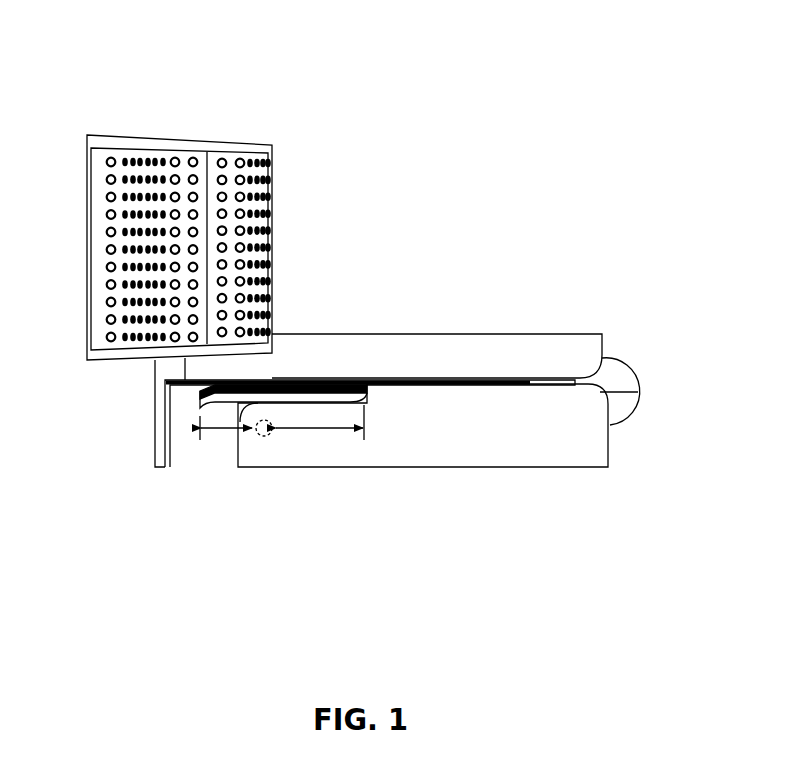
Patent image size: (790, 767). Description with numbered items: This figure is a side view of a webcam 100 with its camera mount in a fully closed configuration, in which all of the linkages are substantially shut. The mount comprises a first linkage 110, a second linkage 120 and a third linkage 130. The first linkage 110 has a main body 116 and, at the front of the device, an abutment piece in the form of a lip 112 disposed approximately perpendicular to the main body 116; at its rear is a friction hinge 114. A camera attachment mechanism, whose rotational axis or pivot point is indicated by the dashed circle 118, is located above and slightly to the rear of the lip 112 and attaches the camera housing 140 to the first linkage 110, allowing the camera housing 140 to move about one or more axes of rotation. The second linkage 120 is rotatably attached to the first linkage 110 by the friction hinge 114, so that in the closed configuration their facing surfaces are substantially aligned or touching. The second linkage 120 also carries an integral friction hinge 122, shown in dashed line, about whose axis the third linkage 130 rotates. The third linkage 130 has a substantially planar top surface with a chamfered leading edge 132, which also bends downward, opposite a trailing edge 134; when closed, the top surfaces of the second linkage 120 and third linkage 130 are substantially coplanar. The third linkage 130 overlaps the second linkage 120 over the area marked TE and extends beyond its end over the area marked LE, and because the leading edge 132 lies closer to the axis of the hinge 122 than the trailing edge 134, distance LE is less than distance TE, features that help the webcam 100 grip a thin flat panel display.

The webcam 100 is at (356, 648).
The first linkage 110 is at (410, 333).
The lip 112 is at (153, 458).
The friction hinge 114 is at (614, 381).
The main body 116 is at (437, 356).
The dashed circle 118 is at (216, 296).
The second linkage 120 is at (458, 432).
The integral friction hinge 122 is at (261, 437).
The third linkage 130 is at (270, 396).
The chamfered leading edge 132 is at (200, 402).
The trailing edge 134 is at (370, 396).
The camera housing 140 is at (184, 140).